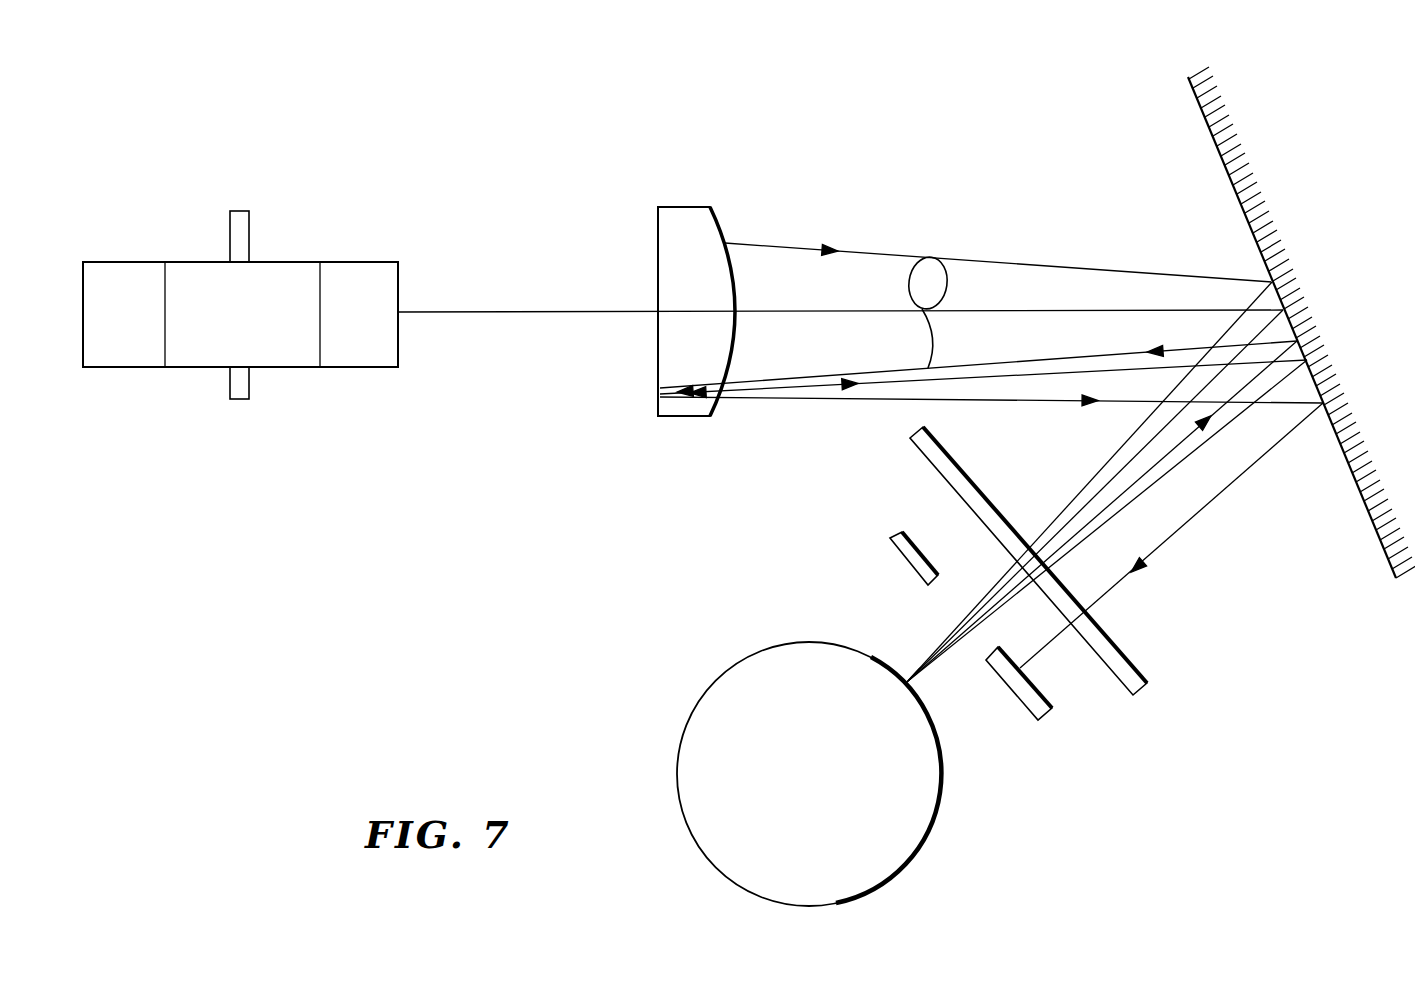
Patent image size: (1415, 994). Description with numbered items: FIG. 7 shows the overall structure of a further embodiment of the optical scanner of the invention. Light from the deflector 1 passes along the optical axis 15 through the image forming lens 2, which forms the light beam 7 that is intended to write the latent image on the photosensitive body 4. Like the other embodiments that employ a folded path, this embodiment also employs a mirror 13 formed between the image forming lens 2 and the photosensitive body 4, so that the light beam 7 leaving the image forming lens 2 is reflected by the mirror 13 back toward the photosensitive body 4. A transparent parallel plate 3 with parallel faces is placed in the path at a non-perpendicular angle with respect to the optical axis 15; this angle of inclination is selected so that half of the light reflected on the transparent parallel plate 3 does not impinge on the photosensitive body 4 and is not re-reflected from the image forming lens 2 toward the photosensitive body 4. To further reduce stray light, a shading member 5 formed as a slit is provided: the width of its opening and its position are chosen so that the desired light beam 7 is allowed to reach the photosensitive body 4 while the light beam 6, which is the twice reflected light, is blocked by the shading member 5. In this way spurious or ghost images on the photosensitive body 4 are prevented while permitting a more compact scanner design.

The deflector 1 is at (290, 262).
The image forming lens 2 is at (687, 410).
The transparent parallel plate 3 is at (1147, 686).
The photosensitive body 4 is at (907, 862).
The shading member 5 is at (1040, 722).
The light beam (twice reflected light) 6 is at (1172, 538).
The light beam 7 is at (963, 262).
The mirror 13 is at (1190, 79).
The optical axis 15 is at (908, 682).